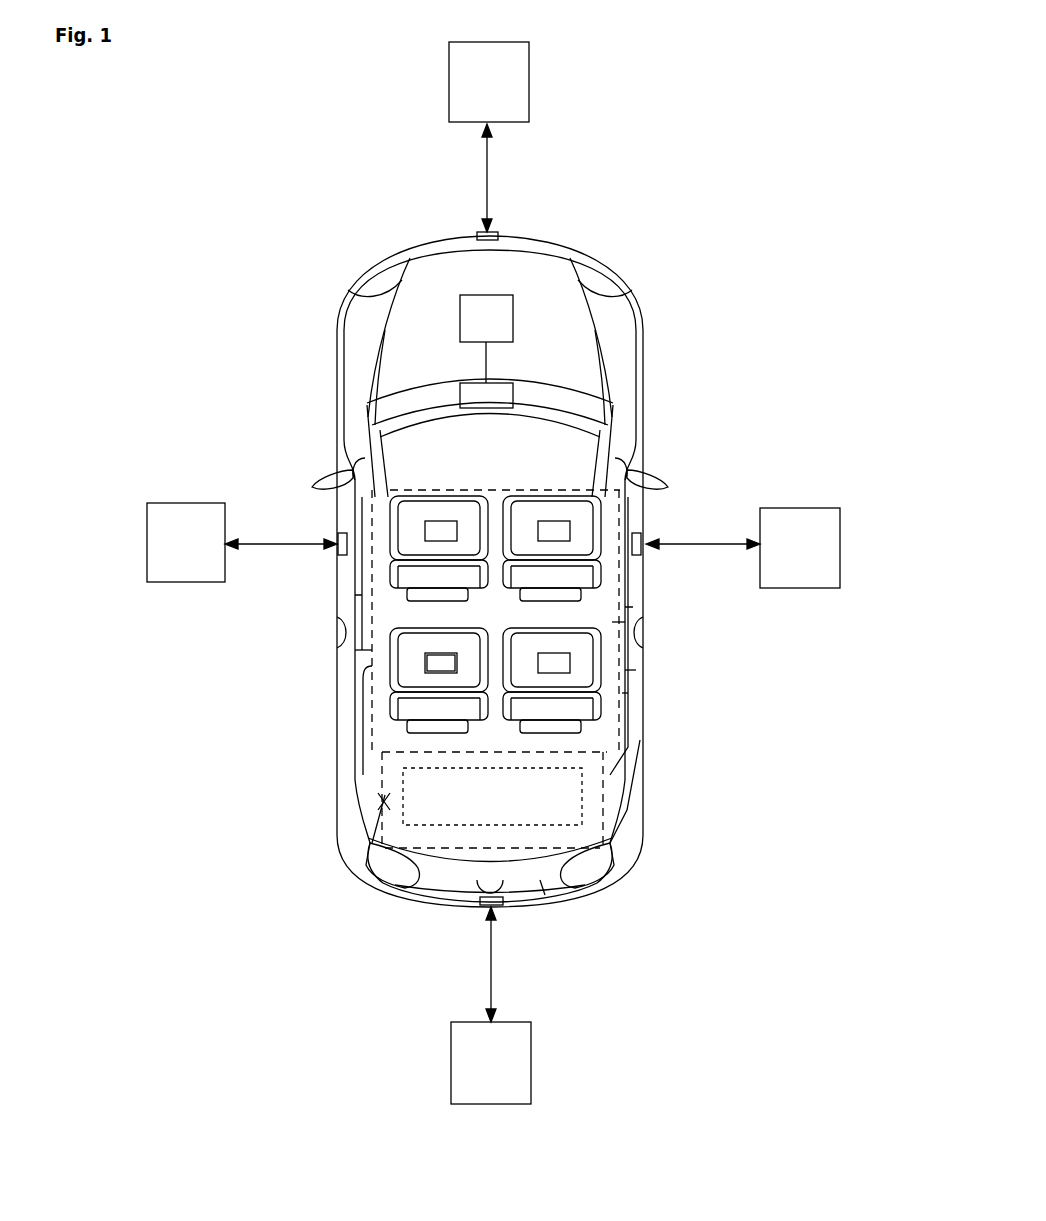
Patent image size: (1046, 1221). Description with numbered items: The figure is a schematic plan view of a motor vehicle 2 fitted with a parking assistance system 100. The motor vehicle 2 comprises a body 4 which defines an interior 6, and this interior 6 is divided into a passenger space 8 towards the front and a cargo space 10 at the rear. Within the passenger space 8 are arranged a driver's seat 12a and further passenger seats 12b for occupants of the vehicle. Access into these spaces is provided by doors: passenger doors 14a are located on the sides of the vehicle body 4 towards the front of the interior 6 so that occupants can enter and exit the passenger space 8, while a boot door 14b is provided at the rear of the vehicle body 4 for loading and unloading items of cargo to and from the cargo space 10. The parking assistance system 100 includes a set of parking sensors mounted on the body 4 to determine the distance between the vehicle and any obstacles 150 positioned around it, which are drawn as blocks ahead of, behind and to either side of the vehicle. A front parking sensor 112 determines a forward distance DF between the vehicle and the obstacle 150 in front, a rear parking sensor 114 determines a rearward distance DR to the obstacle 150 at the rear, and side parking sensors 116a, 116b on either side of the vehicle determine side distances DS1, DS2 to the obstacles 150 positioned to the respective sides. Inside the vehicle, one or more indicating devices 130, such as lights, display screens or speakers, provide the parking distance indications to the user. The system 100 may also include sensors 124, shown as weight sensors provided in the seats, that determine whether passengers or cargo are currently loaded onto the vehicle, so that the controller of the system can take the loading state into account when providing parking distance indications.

The motor vehicle 2 is at (667, 118).
The body 4 is at (636, 305).
The interior 6 is at (607, 623).
The passenger space 8 is at (622, 693).
The cargo space 10 is at (600, 790).
The driver's seat 12a is at (395, 549).
The passenger seats 12b is at (412, 672).
The passenger doors 14a is at (340, 595).
The boot door 14b is at (543, 882).
The parking assistance system 100 is at (548, 260).
The front parking sensor 112 is at (483, 230).
The rear parking sensor 114 is at (483, 906).
The side parking sensor 116a is at (641, 540).
The side parking sensor 116b is at (335, 535).
The sensors 124 is at (437, 668).
The indicating devices 130 is at (520, 392).
The obstacles 150 is at (522, 42).
The forward distance DF is at (490, 160).
The rearward distance DR is at (497, 965).
The side distance DS1 is at (720, 544).
The side distance DS2 is at (265, 546).